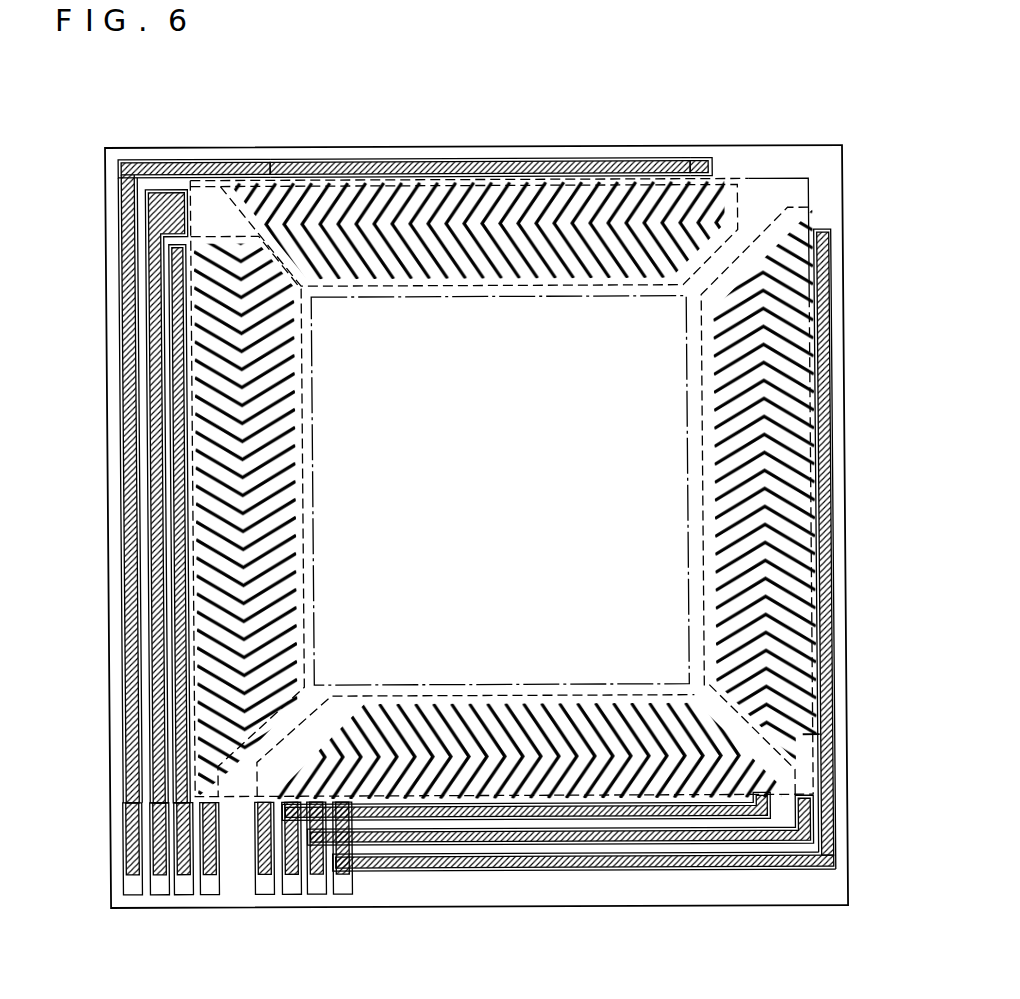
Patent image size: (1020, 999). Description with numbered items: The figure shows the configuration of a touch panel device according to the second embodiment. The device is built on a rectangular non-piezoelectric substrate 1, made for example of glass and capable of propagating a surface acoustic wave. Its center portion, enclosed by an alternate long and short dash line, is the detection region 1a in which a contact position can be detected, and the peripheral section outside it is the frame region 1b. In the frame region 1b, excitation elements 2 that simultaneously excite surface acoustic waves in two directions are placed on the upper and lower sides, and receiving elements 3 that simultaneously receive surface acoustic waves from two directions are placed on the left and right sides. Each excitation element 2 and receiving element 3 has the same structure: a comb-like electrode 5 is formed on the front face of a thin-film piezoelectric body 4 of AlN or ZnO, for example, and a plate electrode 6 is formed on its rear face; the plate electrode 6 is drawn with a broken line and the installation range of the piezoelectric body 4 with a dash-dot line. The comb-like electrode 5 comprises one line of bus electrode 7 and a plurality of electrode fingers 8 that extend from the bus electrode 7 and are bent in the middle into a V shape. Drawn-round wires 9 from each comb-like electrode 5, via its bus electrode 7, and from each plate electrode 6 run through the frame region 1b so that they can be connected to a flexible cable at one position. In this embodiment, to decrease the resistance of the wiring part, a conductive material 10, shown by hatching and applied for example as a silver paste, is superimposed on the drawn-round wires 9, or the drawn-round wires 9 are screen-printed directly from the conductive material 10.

The non-piezoelectric substrate 1 is at (788, 148).
The detection region 1a is at (497, 298).
The frame region 1b is at (517, 165).
The excitation element 2 is at (455, 187).
The receiving element 3 is at (185, 483).
The piezoelectric body 4 is at (757, 181).
The comb-like electrode 5 is at (592, 165).
The plate electrode 6 is at (262, 165).
The bus electrode 7 is at (700, 176).
The electrode fingers 8 is at (400, 205).
The drawn-round wires 9 is at (120, 383).
The conductive material 10 is at (140, 537).